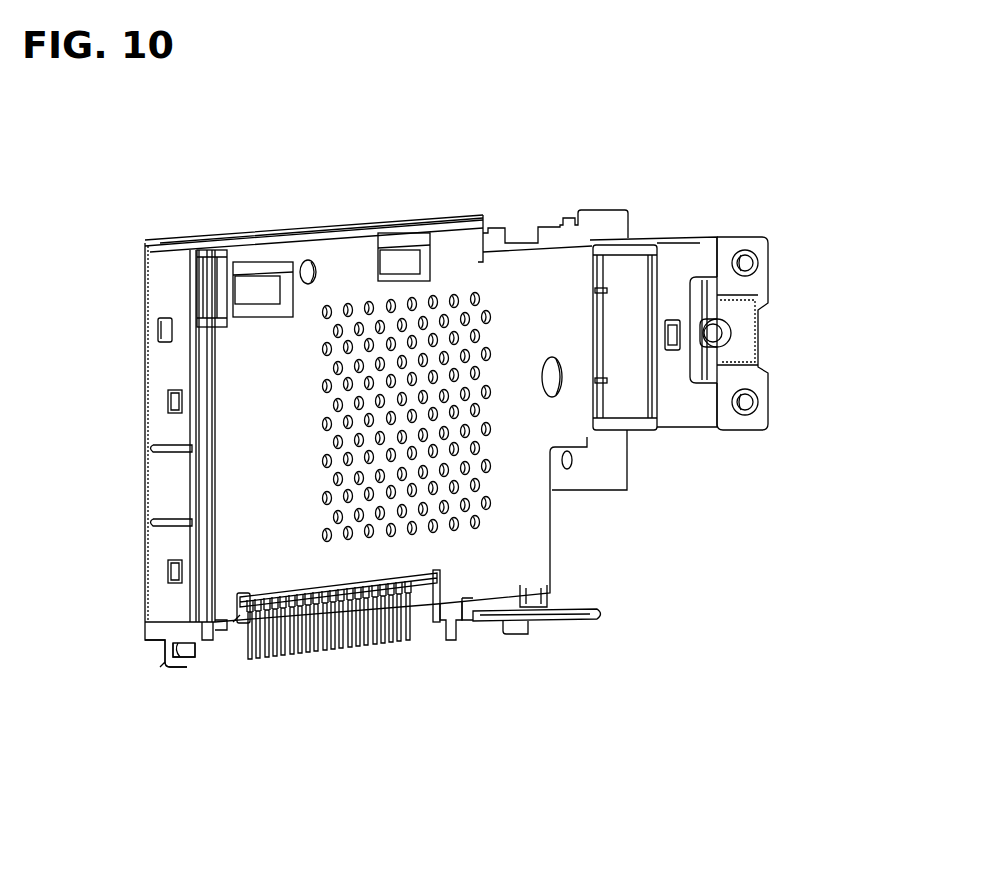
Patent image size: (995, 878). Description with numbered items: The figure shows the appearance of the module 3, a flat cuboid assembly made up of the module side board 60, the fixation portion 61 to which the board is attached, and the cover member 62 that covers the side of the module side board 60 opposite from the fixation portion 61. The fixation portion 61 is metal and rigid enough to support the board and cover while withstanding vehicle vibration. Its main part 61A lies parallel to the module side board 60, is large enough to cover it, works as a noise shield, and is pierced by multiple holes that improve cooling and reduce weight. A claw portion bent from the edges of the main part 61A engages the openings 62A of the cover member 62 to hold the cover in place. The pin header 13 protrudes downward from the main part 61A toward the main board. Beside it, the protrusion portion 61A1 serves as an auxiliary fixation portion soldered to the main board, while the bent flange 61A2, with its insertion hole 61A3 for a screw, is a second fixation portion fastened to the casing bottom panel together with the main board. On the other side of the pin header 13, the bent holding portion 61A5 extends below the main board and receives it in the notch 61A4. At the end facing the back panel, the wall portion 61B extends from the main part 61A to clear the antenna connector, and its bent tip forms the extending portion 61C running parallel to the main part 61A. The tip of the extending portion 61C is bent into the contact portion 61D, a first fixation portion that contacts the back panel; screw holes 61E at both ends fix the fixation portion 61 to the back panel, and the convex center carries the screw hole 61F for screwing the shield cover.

The module 3 is at (573, 148).
The pin header 13 is at (330, 648).
The module side board 60 is at (598, 213).
The fixation portion 61 is at (552, 553).
The main part 61A is at (530, 515).
The protrusion portion 61A1 is at (443, 640).
The flange 61A2 is at (587, 622).
The insertion hole 61A3 is at (553, 600).
The notch 61A4 is at (190, 657).
The holding portion 61A5 is at (170, 660).
The wall portion 61B is at (632, 400).
The extending portion 61C is at (683, 400).
The contact portion 61D is at (770, 372).
The screw holes 61E is at (747, 265).
The screw hole 61F is at (722, 330).
The cover member 62 is at (143, 278).
The openings 62A is at (207, 243).